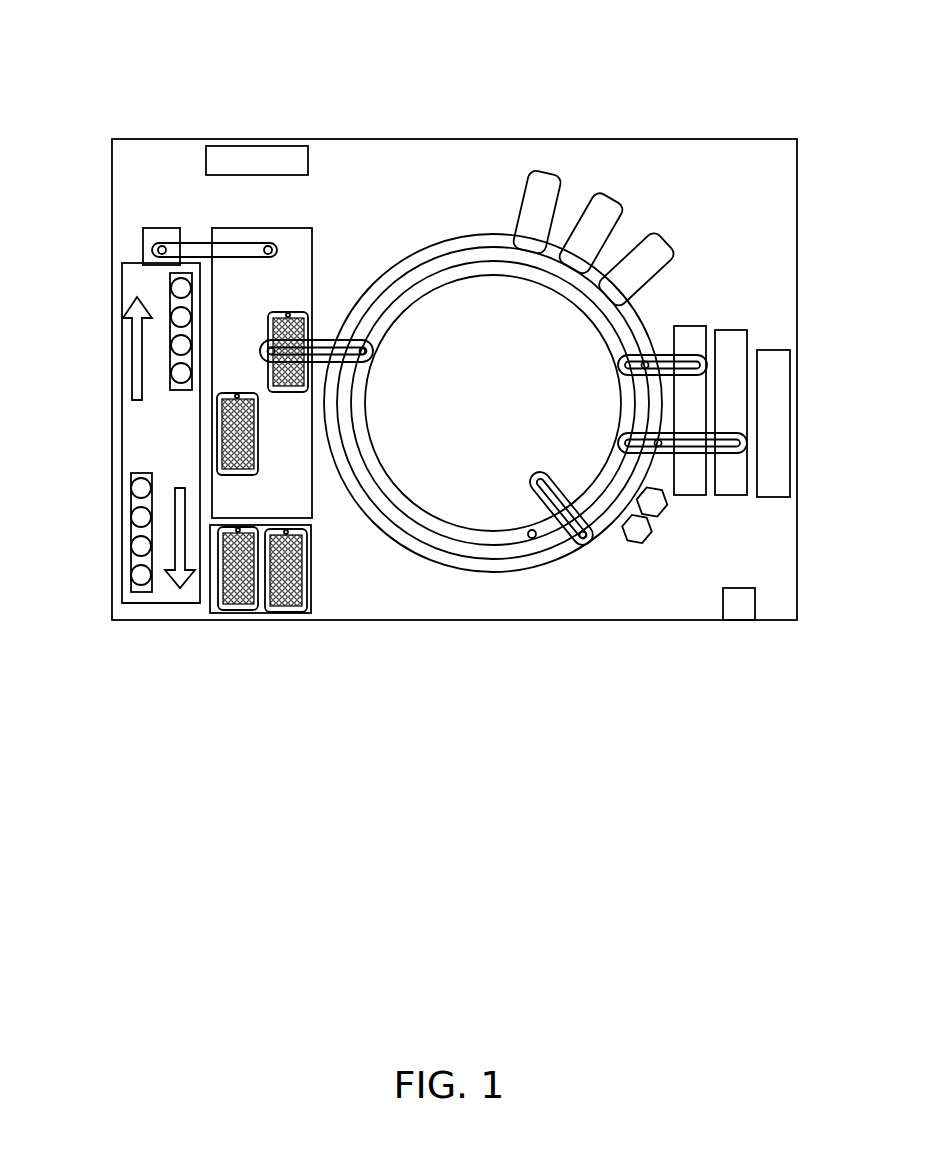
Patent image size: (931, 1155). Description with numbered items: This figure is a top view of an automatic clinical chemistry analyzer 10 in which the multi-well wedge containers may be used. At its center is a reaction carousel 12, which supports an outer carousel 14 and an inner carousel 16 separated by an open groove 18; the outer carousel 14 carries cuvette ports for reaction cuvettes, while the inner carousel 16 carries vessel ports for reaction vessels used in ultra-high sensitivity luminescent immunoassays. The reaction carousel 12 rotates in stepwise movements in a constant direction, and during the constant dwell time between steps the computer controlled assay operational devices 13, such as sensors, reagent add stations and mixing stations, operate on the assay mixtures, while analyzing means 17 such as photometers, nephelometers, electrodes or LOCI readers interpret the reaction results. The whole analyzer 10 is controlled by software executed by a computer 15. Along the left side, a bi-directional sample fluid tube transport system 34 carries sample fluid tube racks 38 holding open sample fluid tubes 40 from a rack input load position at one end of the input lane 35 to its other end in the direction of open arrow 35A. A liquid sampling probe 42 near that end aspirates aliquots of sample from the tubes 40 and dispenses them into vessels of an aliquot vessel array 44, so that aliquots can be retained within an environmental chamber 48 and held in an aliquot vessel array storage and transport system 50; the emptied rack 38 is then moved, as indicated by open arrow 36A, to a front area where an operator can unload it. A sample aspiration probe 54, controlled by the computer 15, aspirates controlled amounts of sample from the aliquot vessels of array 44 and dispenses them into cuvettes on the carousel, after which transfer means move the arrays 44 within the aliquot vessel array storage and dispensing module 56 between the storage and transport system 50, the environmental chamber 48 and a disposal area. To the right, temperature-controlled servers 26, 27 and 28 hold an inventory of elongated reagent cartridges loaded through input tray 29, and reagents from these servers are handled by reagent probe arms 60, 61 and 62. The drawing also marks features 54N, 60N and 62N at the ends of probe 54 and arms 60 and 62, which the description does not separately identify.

The analyzer 10 is at (110, 158).
The reaction carousel 12 is at (415, 232).
The assay operational devices 13 is at (658, 528).
The outer carousel 14 is at (470, 242).
The computer 15 is at (739, 604).
The inner carousel 16 is at (493, 267).
The analyzing means 17 is at (662, 237).
The open groove 18 is at (452, 258).
The server 26 is at (503, 419).
The server 27 is at (733, 497).
The server 28 is at (690, 497).
The input tray 29 is at (775, 497).
The sample fluid tube transport system 34 is at (122, 494).
The input lane 35 is at (143, 417).
The open arrow 35A is at (135, 352).
The open arrow 36A is at (178, 487).
The sample fluid tube rack 38 is at (128, 596).
The sample fluid tube 40 is at (143, 490).
The liquid sampling probe 42 is at (193, 230).
The aliquot vessel array 44 is at (300, 310).
The environmental chamber 48 is at (283, 147).
The aliquot vessel array storage and transport system 50 is at (263, 228).
The sample aspiration probe 54 is at (330, 342).
The first nozzle 54N is at (370, 354).
The aliquot vessel array storage and dispensing module 56 is at (312, 608).
The reagent probe arm 60 is at (538, 470).
The second nozzle 60N is at (588, 540).
The reagent probe arm 61 is at (747, 435).
The reagent probe arm 62 is at (707, 355).
The fourth nozzle 62N is at (648, 352).